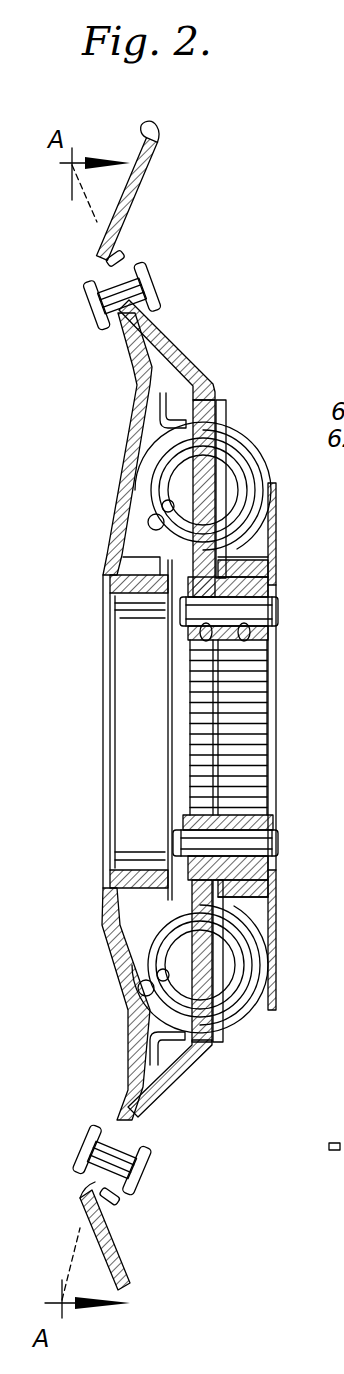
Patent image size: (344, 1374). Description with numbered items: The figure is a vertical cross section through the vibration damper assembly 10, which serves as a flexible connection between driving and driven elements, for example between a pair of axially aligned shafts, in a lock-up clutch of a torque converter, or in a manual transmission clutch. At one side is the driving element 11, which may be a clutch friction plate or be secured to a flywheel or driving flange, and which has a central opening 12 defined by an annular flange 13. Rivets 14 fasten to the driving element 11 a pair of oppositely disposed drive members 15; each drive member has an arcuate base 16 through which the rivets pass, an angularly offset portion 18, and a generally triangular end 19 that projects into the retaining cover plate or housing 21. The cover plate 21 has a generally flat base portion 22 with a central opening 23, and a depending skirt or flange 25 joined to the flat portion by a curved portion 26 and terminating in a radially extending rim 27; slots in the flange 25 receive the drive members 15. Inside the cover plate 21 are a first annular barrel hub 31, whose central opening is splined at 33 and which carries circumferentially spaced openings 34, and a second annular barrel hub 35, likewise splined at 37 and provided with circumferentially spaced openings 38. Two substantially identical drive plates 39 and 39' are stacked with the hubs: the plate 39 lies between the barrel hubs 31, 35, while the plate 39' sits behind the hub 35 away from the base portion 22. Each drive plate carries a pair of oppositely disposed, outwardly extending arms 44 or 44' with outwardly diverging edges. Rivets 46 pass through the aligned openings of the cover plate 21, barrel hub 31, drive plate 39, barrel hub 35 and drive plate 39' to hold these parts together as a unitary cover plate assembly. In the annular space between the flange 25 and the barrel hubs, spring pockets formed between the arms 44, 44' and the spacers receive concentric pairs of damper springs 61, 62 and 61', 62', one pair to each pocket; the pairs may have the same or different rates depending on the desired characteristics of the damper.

The vibration damper assembly 10 is at (212, 329).
The driving element 11 is at (138, 184).
The central opening 12 is at (127, 733).
The annular flange 13 is at (130, 863).
The rivets 14 is at (143, 283).
The drive members 15 is at (220, 352).
The arcuate base 16 is at (120, 257).
The angularly offset portion 18 is at (167, 343).
The generally triangular end 19 is at (207, 487).
The retaining cover plate 21 is at (279, 523).
The flat base portion 22 is at (270, 897).
The central opening 23 is at (273, 670).
The depending skirt or flange 25 is at (338, 1110).
The curved portion 26 is at (221, 423).
The radially extending rim 27 is at (333, 1152).
The first annular barrel hub 31 is at (273, 573).
The splines 33 is at (250, 733).
The circumferentially spaced openings 34 is at (253, 657).
The second annular barrel hub 35 is at (203, 827).
The splines 37 is at (203, 697).
The circumferentially spaced openings 38 is at (197, 645).
The drive plate 39 is at (252, 564).
The drive plate 39' is at (111, 444).
The arms 44 is at (256, 704).
The arms 44' is at (125, 729).
The rivets 46 is at (272, 618).
The damper spring 61 is at (239, 965).
The damper spring 61' is at (233, 490).
The damper spring 62 is at (143, 965).
The damper spring 62' is at (153, 489).